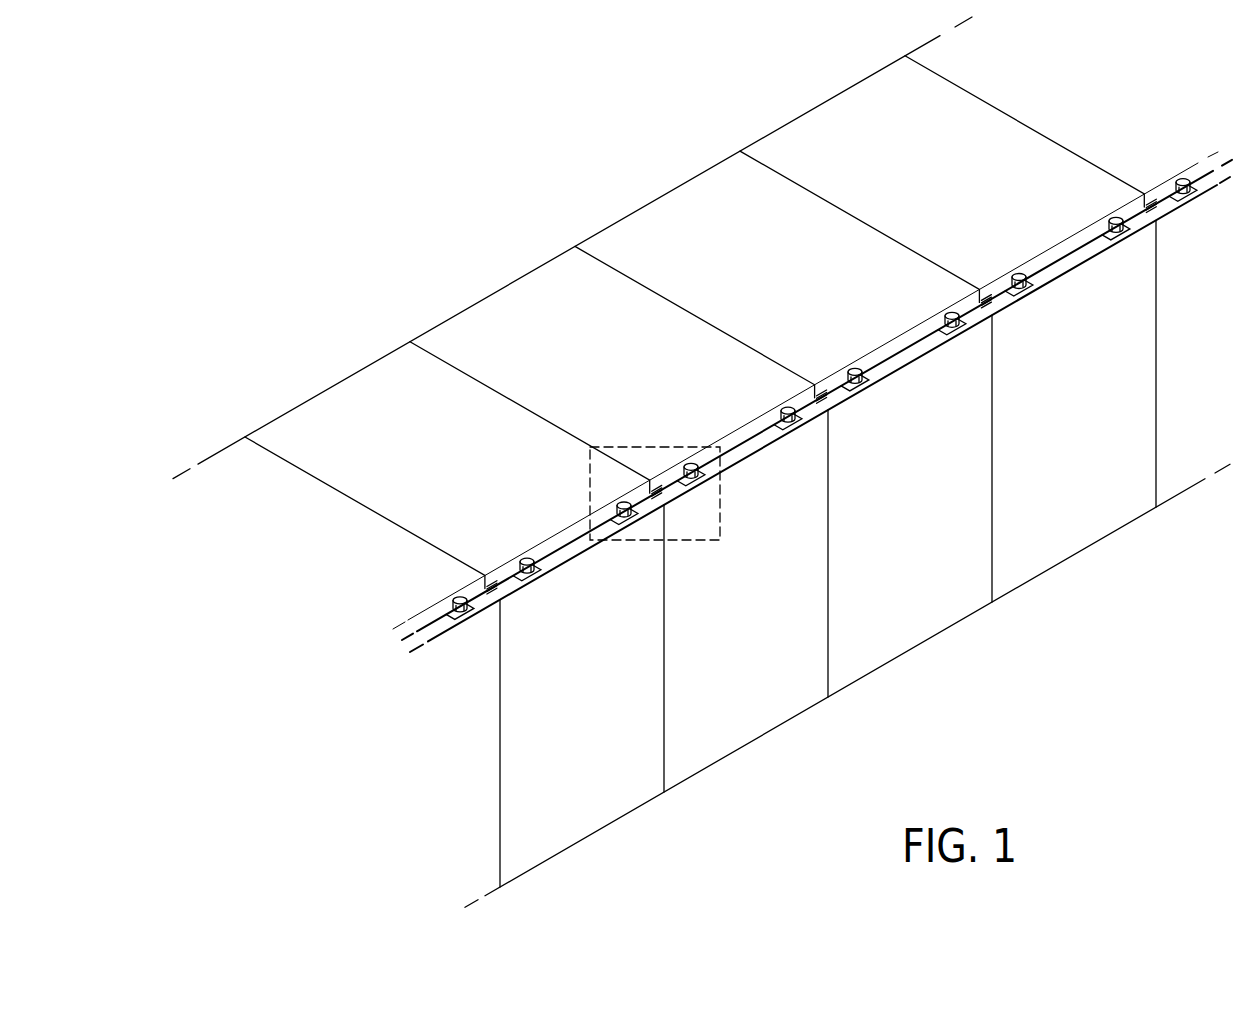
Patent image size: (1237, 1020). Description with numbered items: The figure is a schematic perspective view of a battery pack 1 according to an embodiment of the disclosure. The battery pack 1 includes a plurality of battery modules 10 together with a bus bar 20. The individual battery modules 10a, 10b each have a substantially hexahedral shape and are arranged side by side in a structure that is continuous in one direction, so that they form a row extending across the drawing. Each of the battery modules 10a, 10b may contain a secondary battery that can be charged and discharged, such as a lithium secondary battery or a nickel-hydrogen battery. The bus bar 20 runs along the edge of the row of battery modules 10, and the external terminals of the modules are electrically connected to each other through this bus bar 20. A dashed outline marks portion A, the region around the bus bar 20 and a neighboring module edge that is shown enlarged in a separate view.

The battery pack 1 is at (341, 106).
The battery modules 10 is at (637, 188).
The battery module 10a is at (335, 405).
The battery module 10b is at (513, 303).
The bus bar 20 is at (640, 518).
The portion A is at (720, 540).